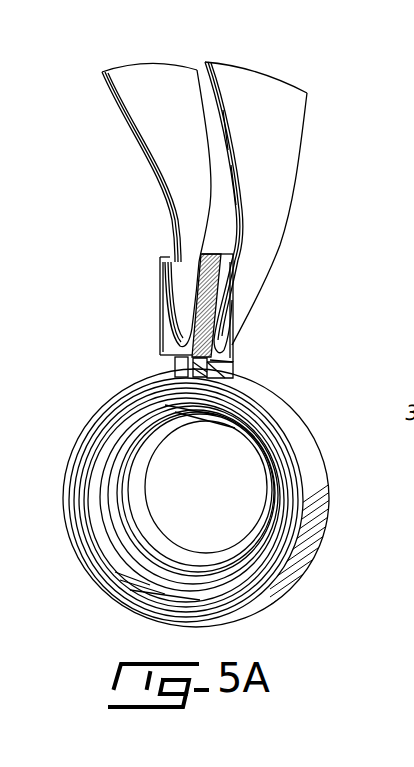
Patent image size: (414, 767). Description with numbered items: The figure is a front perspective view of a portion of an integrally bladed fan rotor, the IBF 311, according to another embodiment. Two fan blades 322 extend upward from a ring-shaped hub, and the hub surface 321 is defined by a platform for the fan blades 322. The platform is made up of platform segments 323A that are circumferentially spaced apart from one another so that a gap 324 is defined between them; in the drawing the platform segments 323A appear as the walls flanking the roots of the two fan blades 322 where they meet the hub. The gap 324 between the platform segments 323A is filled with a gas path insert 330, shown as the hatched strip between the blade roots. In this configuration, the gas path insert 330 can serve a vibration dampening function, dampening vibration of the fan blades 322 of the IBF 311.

The IBF 311 is at (331, 341).
The hub surface 321 is at (163, 257).
The fan blades 322 is at (273, 150).
The platform segments 323A is at (167, 290).
The gap 324 is at (222, 239).
The gas path insert 330 is at (220, 304).